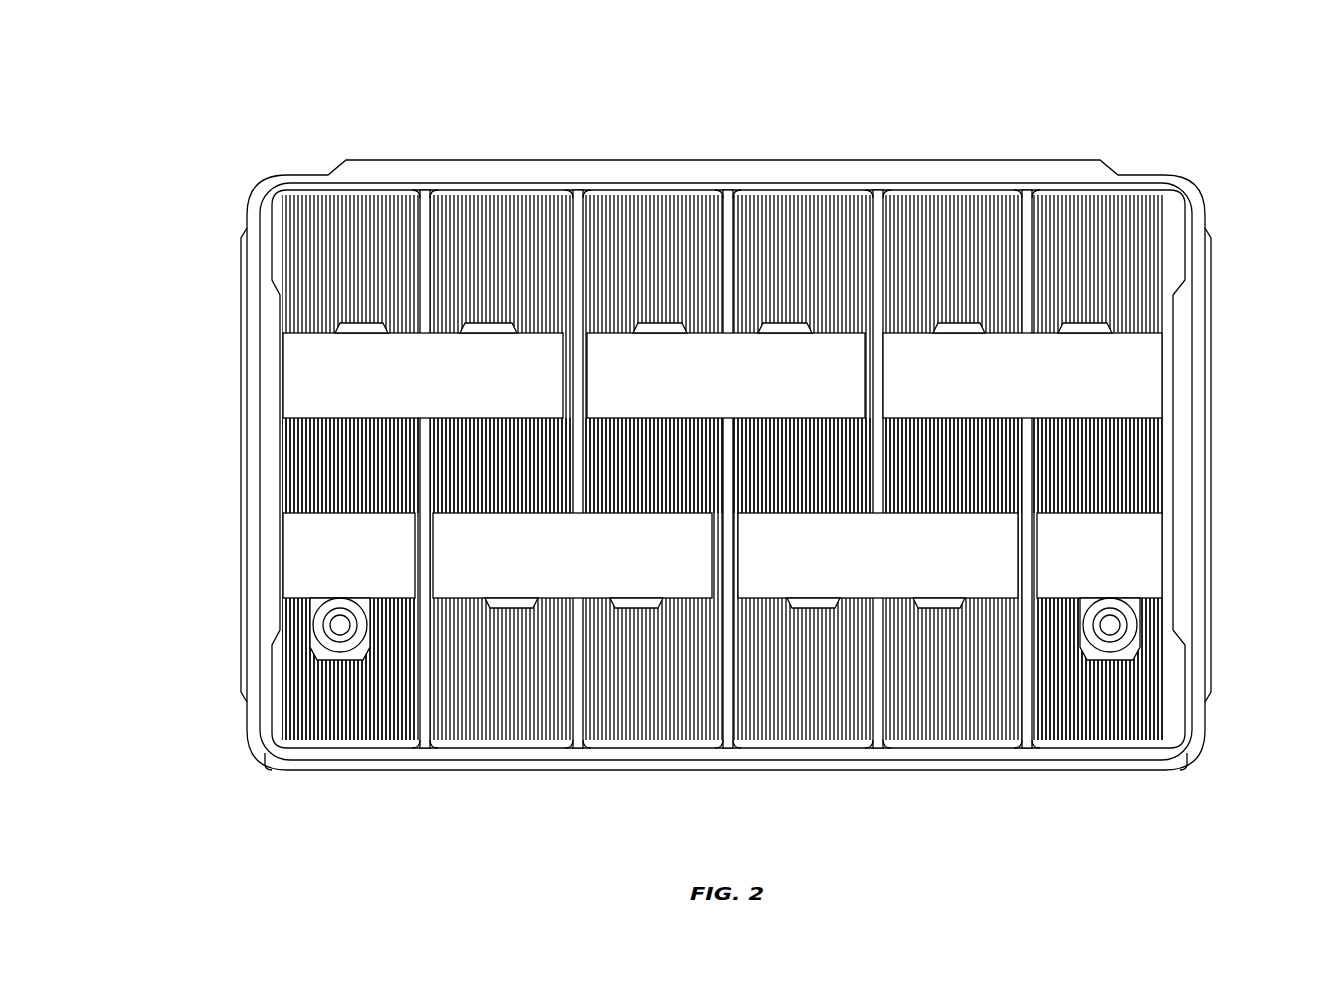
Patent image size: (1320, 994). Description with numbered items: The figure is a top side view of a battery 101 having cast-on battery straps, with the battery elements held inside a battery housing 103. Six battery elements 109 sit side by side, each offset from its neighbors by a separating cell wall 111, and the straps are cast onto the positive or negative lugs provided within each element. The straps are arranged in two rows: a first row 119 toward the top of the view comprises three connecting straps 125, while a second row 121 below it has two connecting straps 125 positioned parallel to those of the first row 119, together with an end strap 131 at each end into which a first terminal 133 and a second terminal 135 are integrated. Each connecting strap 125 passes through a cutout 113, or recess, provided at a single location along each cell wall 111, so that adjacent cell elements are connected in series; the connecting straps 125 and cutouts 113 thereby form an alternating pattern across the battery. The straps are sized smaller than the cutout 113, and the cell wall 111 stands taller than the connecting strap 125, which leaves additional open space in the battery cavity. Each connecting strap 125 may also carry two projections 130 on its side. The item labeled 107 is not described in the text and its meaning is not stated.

The battery 101 is at (577, 95).
The battery housing 103 is at (318, 168).
The rib 107 is at (440, 183).
The elements 109 is at (345, 243).
The cell wall 111 is at (728, 455).
The cutout 113 is at (425, 330).
The first row 119 is at (1173, 353).
The second row 121 is at (1172, 552).
The connecting strap 125 is at (930, 363).
The projections 130 is at (520, 606).
The end strap 131 is at (300, 567).
The first terminal 133 is at (340, 648).
The second terminal 135 is at (1140, 737).